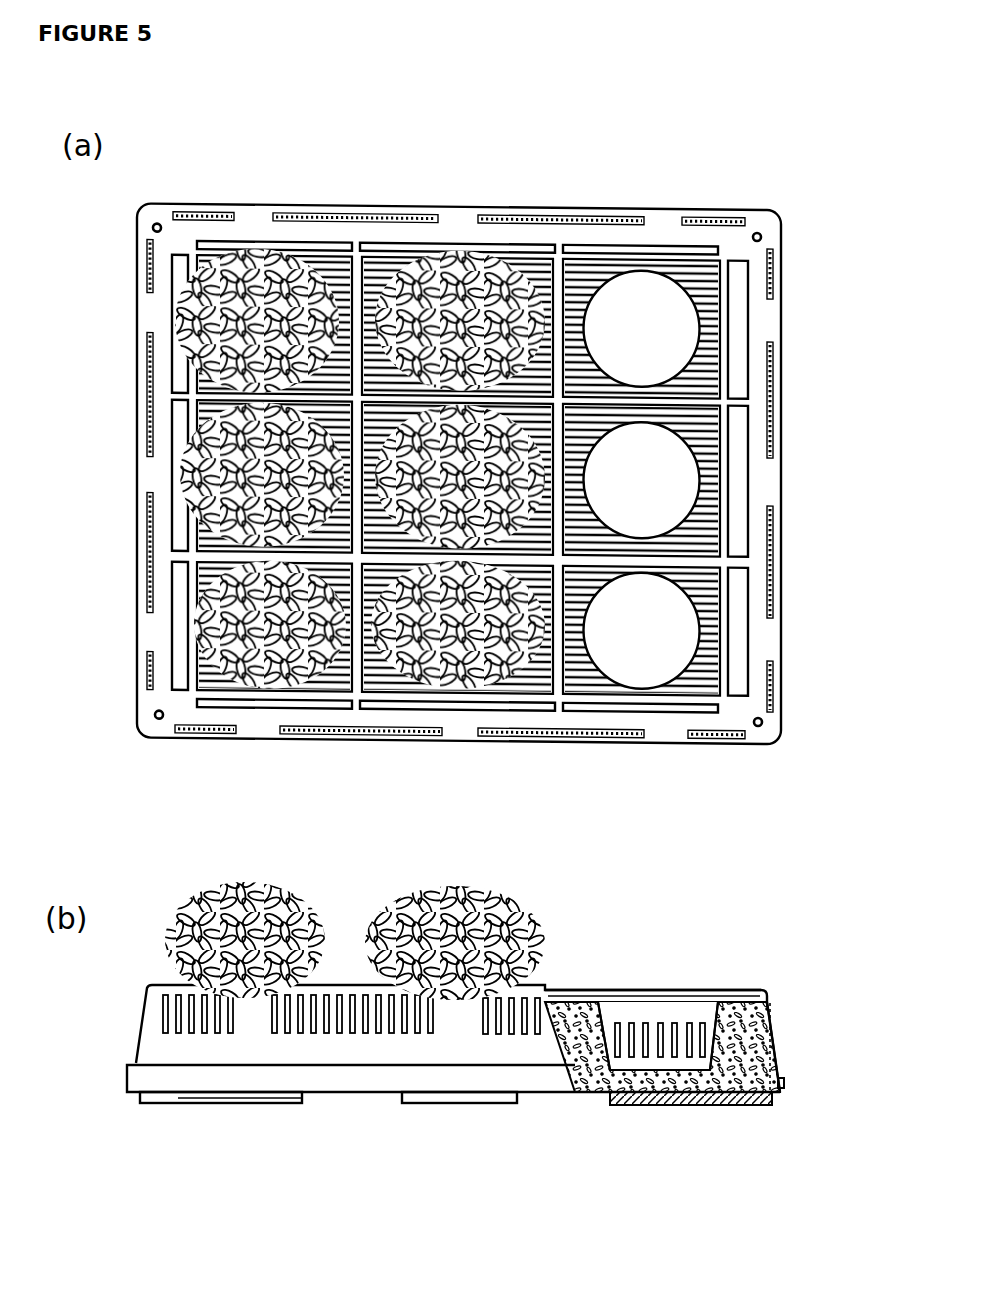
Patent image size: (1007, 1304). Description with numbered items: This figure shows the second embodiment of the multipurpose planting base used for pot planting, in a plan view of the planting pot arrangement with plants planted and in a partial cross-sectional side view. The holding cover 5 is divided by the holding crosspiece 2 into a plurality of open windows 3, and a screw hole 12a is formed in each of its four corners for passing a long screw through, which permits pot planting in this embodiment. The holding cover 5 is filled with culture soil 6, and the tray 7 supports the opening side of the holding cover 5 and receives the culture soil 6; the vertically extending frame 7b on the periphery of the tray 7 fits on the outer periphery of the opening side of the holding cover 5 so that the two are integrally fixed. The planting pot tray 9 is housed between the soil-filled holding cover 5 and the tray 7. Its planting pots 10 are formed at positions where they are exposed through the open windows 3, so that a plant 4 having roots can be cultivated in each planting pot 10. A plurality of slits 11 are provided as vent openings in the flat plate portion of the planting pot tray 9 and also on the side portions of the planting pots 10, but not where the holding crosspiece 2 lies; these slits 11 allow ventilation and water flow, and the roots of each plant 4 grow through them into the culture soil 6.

The holding crosspiece 2 is at (338, 263).
The open window 3 is at (536, 277).
The plant 4 is at (454, 277).
The holding cover 5 is at (655, 222).
The culture soil 6 is at (752, 1050).
The tray 7 is at (362, 1088).
The vertically extending frame 7b is at (784, 1083).
The planting pot tray 9 is at (646, 1000).
The planting pot 10 is at (681, 325).
The slit 11 is at (706, 527).
The screw hole 12a is at (761, 236).